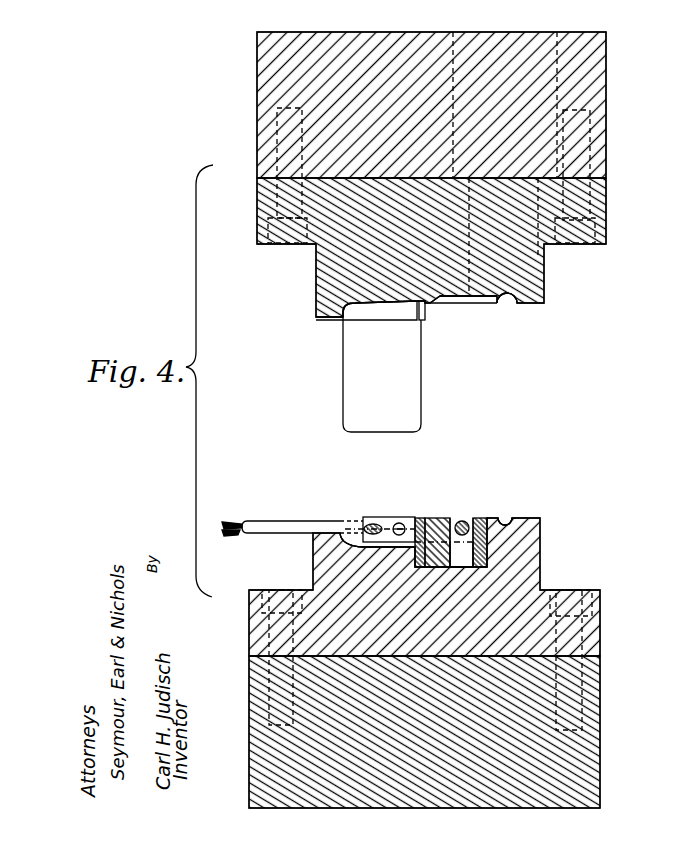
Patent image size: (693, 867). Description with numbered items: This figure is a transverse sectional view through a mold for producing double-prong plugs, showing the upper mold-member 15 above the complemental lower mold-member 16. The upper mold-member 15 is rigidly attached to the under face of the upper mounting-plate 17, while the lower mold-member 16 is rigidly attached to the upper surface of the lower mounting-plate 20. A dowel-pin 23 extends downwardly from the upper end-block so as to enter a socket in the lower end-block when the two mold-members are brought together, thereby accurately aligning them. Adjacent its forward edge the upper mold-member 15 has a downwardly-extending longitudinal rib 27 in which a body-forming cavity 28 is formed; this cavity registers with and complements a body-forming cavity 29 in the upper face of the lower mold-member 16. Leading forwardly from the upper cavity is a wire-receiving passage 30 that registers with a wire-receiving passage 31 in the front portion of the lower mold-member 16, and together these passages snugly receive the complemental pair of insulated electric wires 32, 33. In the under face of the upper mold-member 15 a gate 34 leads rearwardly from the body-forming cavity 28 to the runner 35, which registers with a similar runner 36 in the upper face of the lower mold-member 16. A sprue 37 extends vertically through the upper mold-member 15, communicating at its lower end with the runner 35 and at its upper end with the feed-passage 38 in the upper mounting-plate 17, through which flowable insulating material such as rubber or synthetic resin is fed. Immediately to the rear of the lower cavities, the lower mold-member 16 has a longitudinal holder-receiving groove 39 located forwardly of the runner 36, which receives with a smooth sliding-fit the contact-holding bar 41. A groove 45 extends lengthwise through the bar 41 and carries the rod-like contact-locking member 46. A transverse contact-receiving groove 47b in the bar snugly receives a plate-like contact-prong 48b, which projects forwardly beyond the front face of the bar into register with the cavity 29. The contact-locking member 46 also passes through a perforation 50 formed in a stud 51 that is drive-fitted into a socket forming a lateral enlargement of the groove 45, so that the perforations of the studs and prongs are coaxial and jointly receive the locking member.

The upper mold-member 15 is at (338, 267).
The lower mold-member 16 is at (533, 568).
The upper mounting-plate 17 is at (278, 76).
The lower mounting-plate 20 is at (582, 759).
The dowel-pin 23 is at (342, 399).
The longitudinal rib 27 is at (424, 311).
The body-forming cavity 28 is at (383, 307).
The body-forming cavity 29 is at (357, 540).
The wire-receiving passage 30 is at (328, 316).
The wire-receiving passage 31 is at (328, 521).
The insulated electric wire 32 is at (228, 537).
The insulated electric wire 33 is at (265, 518).
The gate 34 is at (481, 299).
The runner 35 is at (505, 304).
The runner 36 is at (506, 515).
The sprue 37 is at (536, 261).
The feed-passage 38 is at (556, 80).
The holder-receiving groove 39 is at (423, 519).
The contact-holding bar 41 is at (437, 523).
The groove 45 is at (467, 520).
The contact-locking member 46 is at (465, 524).
The contact-receiving groove 47b is at (423, 522).
The contact-prong 48b is at (383, 516).
The perforation 50 is at (473, 520).
The stud 51 is at (470, 554).